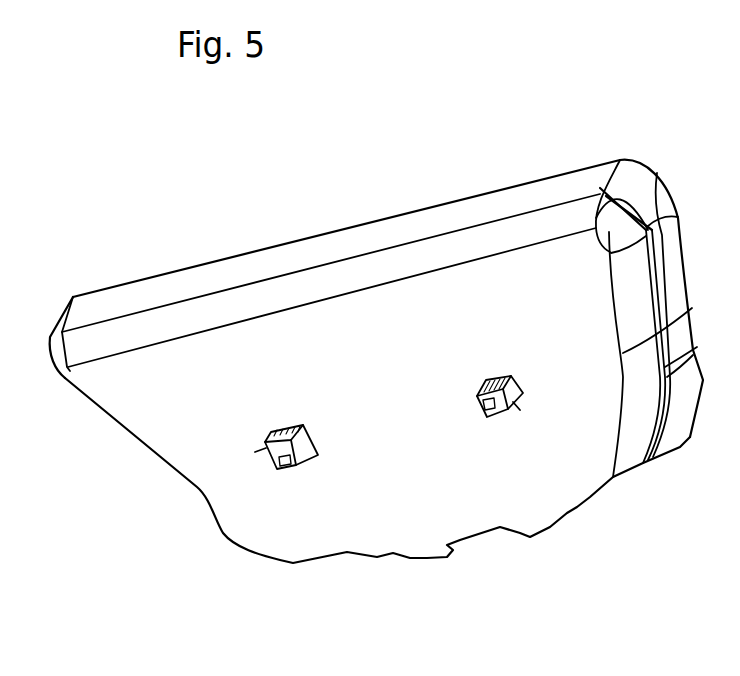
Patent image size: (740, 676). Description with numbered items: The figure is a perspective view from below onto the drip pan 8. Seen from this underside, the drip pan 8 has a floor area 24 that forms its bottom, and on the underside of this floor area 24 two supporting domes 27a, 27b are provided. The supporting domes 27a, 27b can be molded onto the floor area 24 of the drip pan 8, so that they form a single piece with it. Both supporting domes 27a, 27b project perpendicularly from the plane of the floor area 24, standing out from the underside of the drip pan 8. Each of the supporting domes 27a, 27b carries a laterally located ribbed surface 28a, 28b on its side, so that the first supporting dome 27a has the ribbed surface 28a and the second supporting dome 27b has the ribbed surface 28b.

The drip pan 8 is at (315, 237).
The floor area 24 is at (407, 488).
The supporting dome 27a is at (266, 448).
The supporting dome 27b is at (513, 402).
The ribbed surface 28a is at (292, 427).
The ribbed surface 28b is at (497, 377).